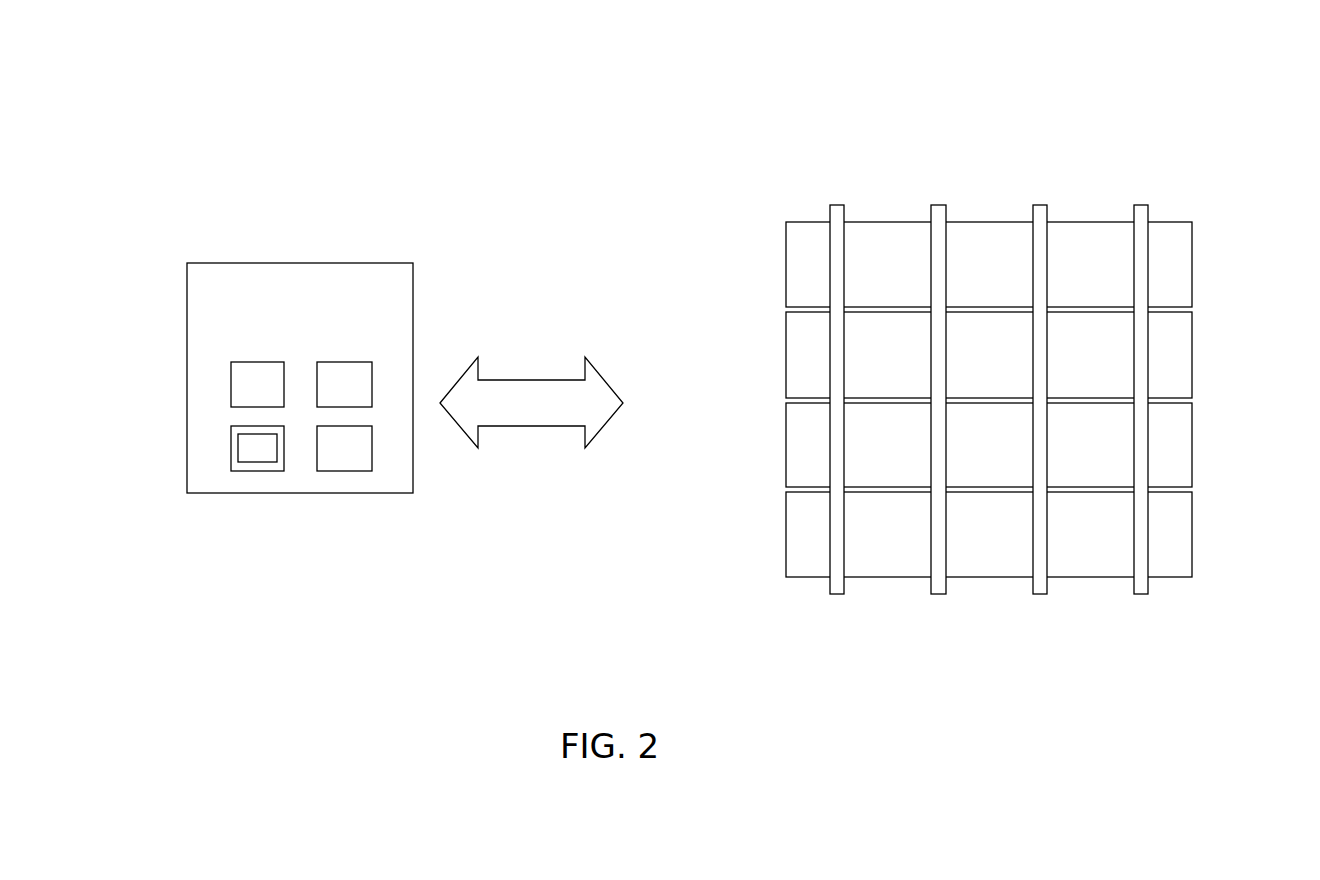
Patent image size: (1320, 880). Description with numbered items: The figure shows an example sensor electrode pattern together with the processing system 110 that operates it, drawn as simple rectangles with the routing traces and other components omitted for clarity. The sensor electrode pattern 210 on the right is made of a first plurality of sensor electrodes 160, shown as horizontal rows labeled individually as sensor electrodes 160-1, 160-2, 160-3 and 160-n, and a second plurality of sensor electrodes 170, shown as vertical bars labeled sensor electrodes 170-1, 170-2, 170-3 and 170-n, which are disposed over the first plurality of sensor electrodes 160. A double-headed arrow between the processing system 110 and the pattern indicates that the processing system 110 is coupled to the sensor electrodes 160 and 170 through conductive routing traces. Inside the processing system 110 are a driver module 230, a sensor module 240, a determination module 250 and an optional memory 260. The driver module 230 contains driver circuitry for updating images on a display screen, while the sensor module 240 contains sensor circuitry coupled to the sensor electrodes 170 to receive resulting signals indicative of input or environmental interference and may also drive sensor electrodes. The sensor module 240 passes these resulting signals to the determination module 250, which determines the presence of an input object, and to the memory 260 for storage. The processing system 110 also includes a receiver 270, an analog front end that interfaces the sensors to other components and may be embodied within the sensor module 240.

The processing system 110 is at (284, 352).
The driver module 230 is at (231, 385).
The sensor module 240 is at (257, 471).
The determination module 250 is at (344, 471).
The memory 260 is at (372, 398).
The receiver 270 is at (238, 448).
The sensor electrode arrangement 210 is at (1095, 82).
The first plurality of sensor electrodes 160 is at (991, 400).
The sensor electrode 160-1 is at (1173, 263).
The sensor electrode 160-2 is at (1173, 345).
The sensor electrode 160-3 is at (1173, 437).
The sensor electrode 160-n is at (1173, 525).
The second plurality of sensor electrodes 170 is at (991, 392).
The sensor electrode 170-1 is at (837, 594).
The sensor electrode 170-2 is at (938, 594).
The sensor electrode 170-3 is at (1040, 594).
The sensor electrode 170-n is at (1141, 594).